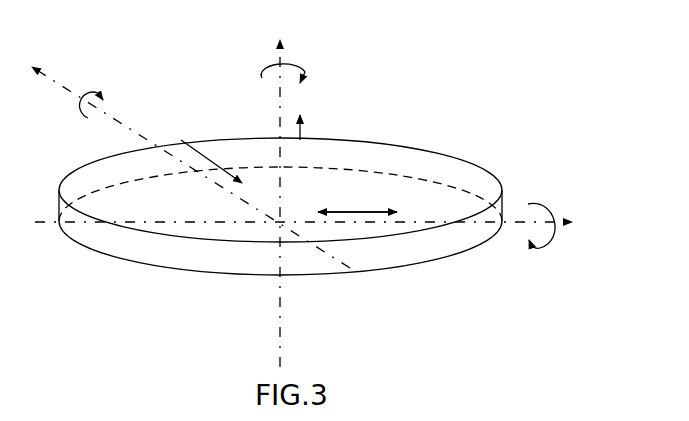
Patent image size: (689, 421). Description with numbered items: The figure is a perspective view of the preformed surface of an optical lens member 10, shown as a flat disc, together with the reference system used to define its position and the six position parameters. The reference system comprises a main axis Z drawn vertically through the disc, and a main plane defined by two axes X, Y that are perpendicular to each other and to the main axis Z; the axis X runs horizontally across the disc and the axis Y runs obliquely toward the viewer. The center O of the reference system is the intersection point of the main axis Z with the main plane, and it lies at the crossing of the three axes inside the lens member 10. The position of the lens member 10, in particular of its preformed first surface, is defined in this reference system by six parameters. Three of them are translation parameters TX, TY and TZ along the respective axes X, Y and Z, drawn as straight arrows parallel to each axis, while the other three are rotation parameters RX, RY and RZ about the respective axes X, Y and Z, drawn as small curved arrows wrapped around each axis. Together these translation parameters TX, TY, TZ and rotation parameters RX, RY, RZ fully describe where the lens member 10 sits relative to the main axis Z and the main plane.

The lens member 10 is at (443, 163).
The axis X is at (315, 208).
The axis Y is at (191, 150).
The main axis Z is at (262, 192).
The center O is at (289, 184).
The rotation parameter RX is at (541, 240).
The rotation parameter RY is at (70, 115).
The rotation parameter RZ is at (300, 64).
The translation parameter TX is at (357, 194).
The translation parameter TY is at (211, 144).
The translation parameter TZ is at (317, 121).